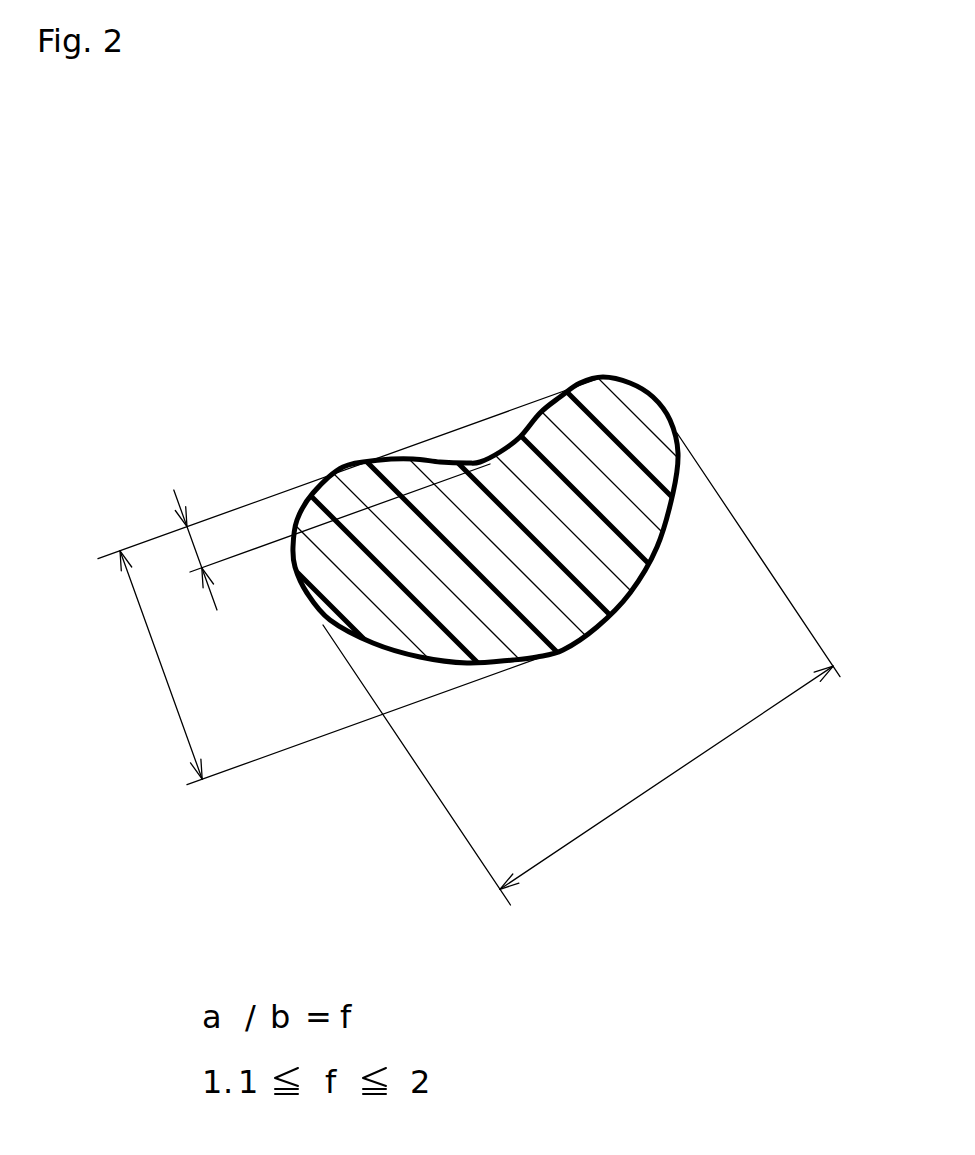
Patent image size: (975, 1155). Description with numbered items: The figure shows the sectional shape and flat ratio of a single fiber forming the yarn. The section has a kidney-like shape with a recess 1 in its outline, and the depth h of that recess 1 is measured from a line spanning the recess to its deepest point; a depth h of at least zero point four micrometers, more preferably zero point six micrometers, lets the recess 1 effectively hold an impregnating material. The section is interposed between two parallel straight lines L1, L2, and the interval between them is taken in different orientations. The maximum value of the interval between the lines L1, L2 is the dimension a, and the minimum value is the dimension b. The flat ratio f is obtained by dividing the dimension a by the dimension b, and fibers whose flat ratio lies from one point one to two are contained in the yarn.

The recess 1 is at (472, 466).
The first parallel straight line L1 is at (278, 493).
The second parallel straight line L2 is at (278, 753).
The maximum value of interval between two straight lines a is at (666, 777).
The minimum value of interval between two straight lines b is at (161, 665).
The depth of recess h is at (332, 537).